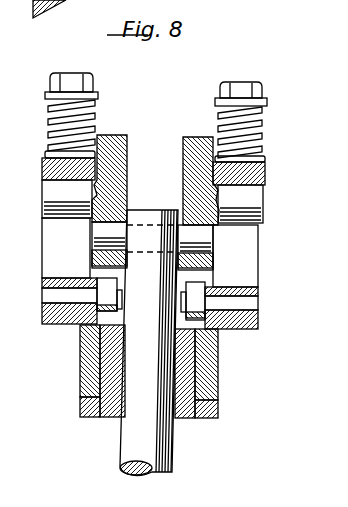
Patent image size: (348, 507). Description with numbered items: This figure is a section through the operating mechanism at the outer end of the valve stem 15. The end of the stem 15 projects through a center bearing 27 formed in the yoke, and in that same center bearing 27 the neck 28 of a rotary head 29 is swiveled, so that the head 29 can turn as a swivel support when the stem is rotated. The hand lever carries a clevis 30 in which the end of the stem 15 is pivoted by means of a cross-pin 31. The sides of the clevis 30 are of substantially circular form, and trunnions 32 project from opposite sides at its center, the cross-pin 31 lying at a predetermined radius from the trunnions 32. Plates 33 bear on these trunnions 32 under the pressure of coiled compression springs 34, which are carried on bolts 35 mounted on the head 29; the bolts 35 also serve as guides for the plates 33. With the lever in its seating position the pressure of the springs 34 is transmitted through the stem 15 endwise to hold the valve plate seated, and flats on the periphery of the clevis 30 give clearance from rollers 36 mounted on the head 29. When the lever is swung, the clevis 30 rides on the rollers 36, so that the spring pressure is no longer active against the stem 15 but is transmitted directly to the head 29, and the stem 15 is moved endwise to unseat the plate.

The stem 15 is at (172, 447).
The center bearing 27 is at (216, 373).
The neck 28 is at (103, 369).
The rotary head 29 is at (262, 273).
The clevis 30 is at (112, 136).
The cross-pin 31 is at (200, 243).
The trunnions 32 is at (258, 200).
The plates 33 is at (266, 167).
The coiled compression springs 34 is at (50, 115).
The bolts 35 is at (70, 80).
The rollers 36 is at (187, 315).